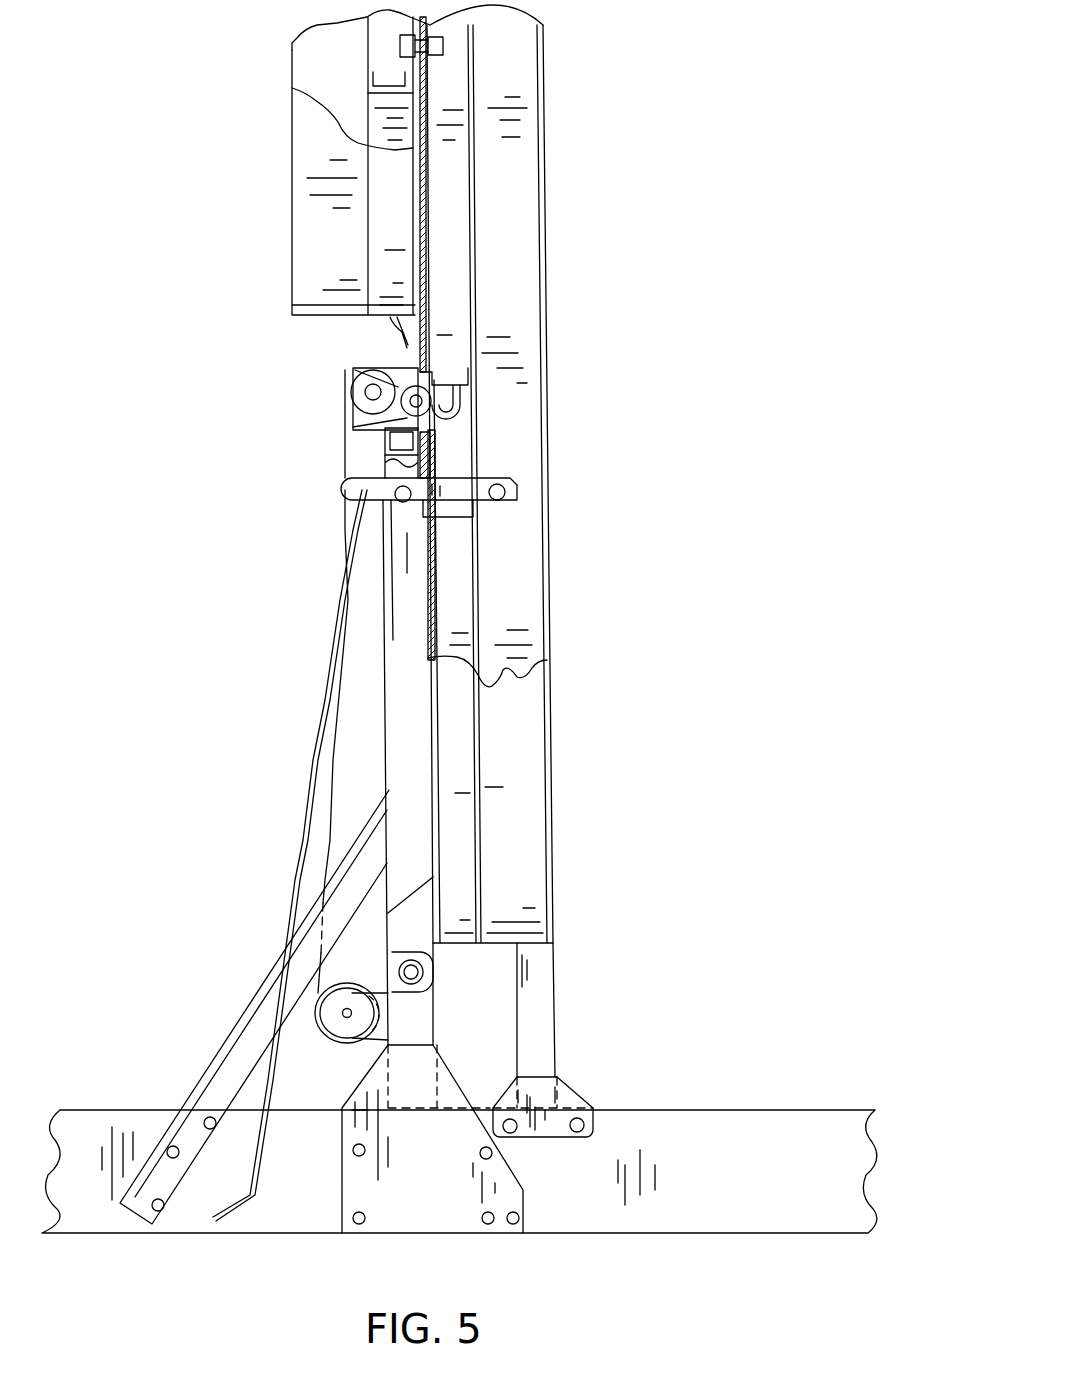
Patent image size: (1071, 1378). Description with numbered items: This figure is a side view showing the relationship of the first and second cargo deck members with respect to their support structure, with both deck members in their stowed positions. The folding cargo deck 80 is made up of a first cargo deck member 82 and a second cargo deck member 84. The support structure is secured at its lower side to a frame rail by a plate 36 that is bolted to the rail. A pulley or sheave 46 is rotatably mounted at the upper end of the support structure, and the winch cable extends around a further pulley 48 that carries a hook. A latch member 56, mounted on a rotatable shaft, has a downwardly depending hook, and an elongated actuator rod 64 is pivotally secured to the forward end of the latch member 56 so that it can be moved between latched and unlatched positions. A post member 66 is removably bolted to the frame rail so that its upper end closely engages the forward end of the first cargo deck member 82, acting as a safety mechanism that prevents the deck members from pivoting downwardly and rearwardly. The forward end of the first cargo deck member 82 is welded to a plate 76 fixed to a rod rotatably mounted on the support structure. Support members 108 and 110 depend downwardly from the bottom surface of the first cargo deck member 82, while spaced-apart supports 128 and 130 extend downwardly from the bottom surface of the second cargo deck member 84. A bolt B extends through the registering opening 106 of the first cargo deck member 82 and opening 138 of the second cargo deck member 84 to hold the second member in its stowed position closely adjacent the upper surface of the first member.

The plate 36 is at (360, 1175).
The pulley or sheave 46 is at (350, 383).
The pulley 48 is at (380, 428).
The latch member 56 is at (478, 490).
The actuator rod 64 is at (312, 778).
The post member 66 is at (537, 1030).
The plate 76 is at (422, 958).
The folding cargo deck 80 is at (613, 52).
The first cargo deck member 82 is at (504, 205).
The second cargo deck member 84 is at (289, 167).
The bolt B is at (445, 44).
The opening 106 is at (367, 18).
The support member 108 is at (458, 866).
The support member 110 is at (457, 597).
The support 128 is at (390, 247).
The support 130 is at (390, 115).
The opening 138 is at (436, 22).